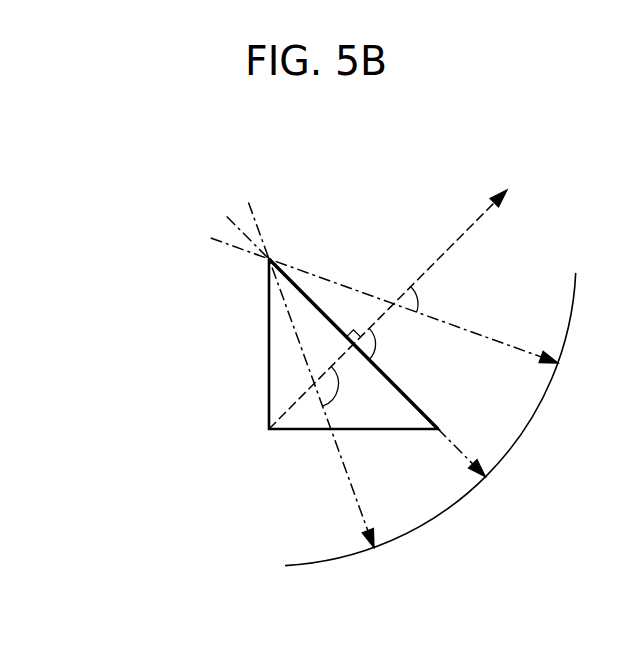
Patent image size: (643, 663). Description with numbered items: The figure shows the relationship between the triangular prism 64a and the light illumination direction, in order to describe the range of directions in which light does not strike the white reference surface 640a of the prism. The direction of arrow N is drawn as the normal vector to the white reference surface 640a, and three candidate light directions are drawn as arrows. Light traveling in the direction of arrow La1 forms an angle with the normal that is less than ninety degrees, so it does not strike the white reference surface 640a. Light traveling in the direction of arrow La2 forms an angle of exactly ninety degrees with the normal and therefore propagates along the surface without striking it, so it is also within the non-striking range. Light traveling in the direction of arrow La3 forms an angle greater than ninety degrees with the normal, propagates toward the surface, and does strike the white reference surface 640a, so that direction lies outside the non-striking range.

The triangular prism 64a is at (300, 430).
The white reference surface 640a is at (413, 403).
The direction of arrow N is at (480, 219).
The direction of arrow La1 is at (500, 340).
The direction of arrow La2 is at (457, 450).
The direction of arrow La3 is at (355, 498).